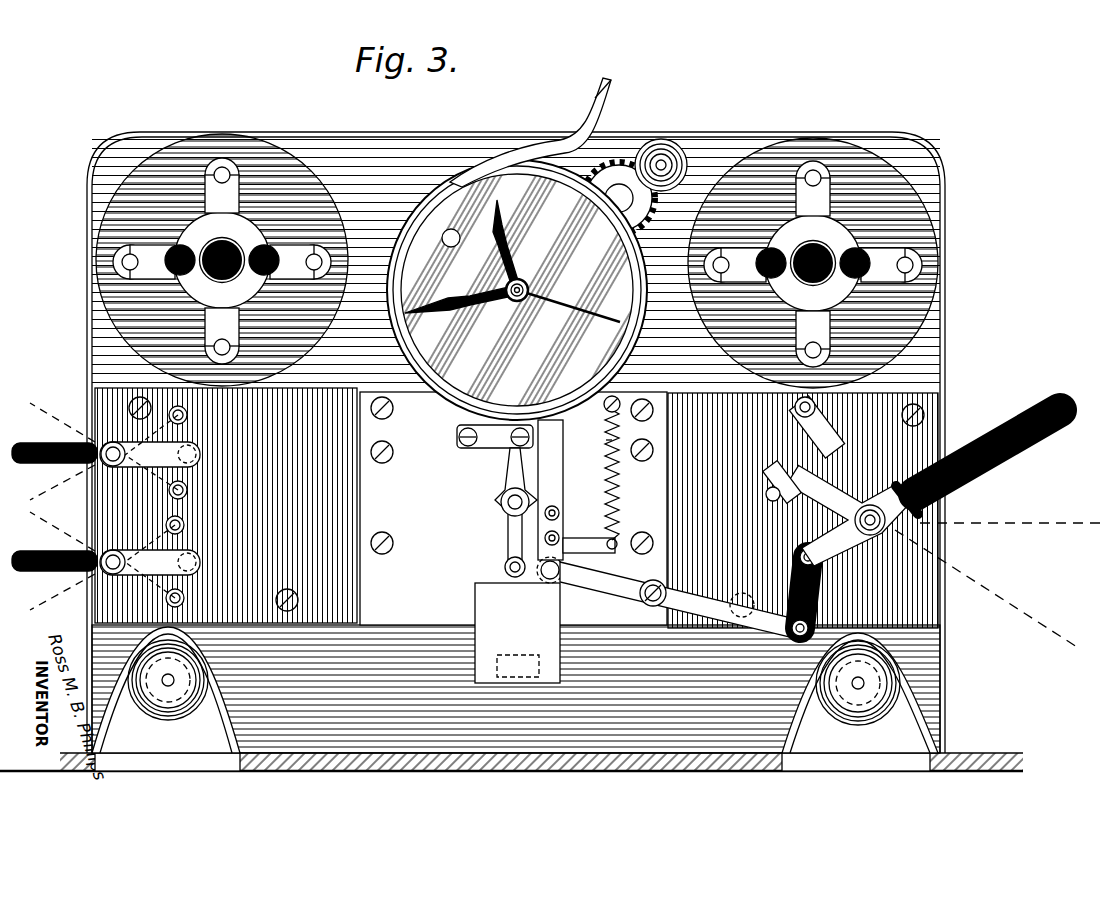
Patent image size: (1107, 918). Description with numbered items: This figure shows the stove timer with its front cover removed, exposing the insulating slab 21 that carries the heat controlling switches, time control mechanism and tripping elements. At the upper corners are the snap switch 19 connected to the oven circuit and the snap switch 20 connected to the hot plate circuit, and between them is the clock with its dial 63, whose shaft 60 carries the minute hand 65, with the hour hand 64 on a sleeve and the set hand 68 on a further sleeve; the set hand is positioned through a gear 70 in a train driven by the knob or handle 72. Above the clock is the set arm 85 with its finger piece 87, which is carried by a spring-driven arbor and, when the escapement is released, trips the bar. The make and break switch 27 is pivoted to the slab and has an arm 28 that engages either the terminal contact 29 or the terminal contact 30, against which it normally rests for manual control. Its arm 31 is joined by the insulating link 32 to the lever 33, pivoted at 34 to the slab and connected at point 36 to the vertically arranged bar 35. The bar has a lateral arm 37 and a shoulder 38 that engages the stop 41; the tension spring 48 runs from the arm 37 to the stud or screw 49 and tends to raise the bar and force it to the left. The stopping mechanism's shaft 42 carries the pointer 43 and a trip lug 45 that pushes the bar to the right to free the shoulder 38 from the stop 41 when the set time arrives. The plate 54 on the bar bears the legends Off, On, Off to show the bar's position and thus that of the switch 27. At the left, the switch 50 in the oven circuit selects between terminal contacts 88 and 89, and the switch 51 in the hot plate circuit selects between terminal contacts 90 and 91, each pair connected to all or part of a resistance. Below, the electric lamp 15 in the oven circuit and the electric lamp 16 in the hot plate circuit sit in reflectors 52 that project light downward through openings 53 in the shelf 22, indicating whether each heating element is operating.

The electric lamp 15 is at (136, 683).
The electric lamp 16 is at (895, 695).
The snap switch 19 is at (258, 238).
The snap switch 20 is at (850, 240).
The insulating slab 21 is at (358, 397).
The shelf 22 is at (990, 773).
The make and break switch 27 is at (1012, 463).
The arm 28 is at (849, 516).
The terminal contact 29 is at (812, 412).
The terminal contact 30 is at (786, 465).
The arm 31 is at (856, 531).
The insulating link 32 is at (800, 618).
The lever 33 is at (712, 624).
The pivot 34 is at (653, 590).
The vertically arranged bar 35 is at (563, 490).
The pivot point 36 is at (556, 590).
The lateral arm 37 is at (592, 528).
The shoulder 38 is at (610, 450).
The stop 41 is at (510, 452).
The shaft 42 is at (512, 503).
The pointer 43 is at (512, 465).
The trip lug 45 is at (508, 564).
The tension spring 48 is at (616, 490).
The stud or screw 49 is at (606, 410).
The switch 50 is at (106, 451).
The switch 51 is at (106, 561).
The reflector 52 is at (130, 650).
The opening 53 is at (205, 771).
The plate 54 is at (490, 610).
The shaft 60 is at (517, 290).
The dial 63 is at (517, 290).
The hour hand 64 is at (506, 236).
The minute hand 65 is at (461, 316).
The set hand 68 is at (525, 295).
The gear 70 is at (619, 198).
The knob or handle 72 is at (688, 164).
The set arm 85 is at (532, 158).
The finger piece 87 is at (594, 100).
The terminal contact 88 is at (172, 410).
The terminal contact 89 is at (186, 489).
The terminal contact 90 is at (183, 526).
The terminal contact 91 is at (183, 598).